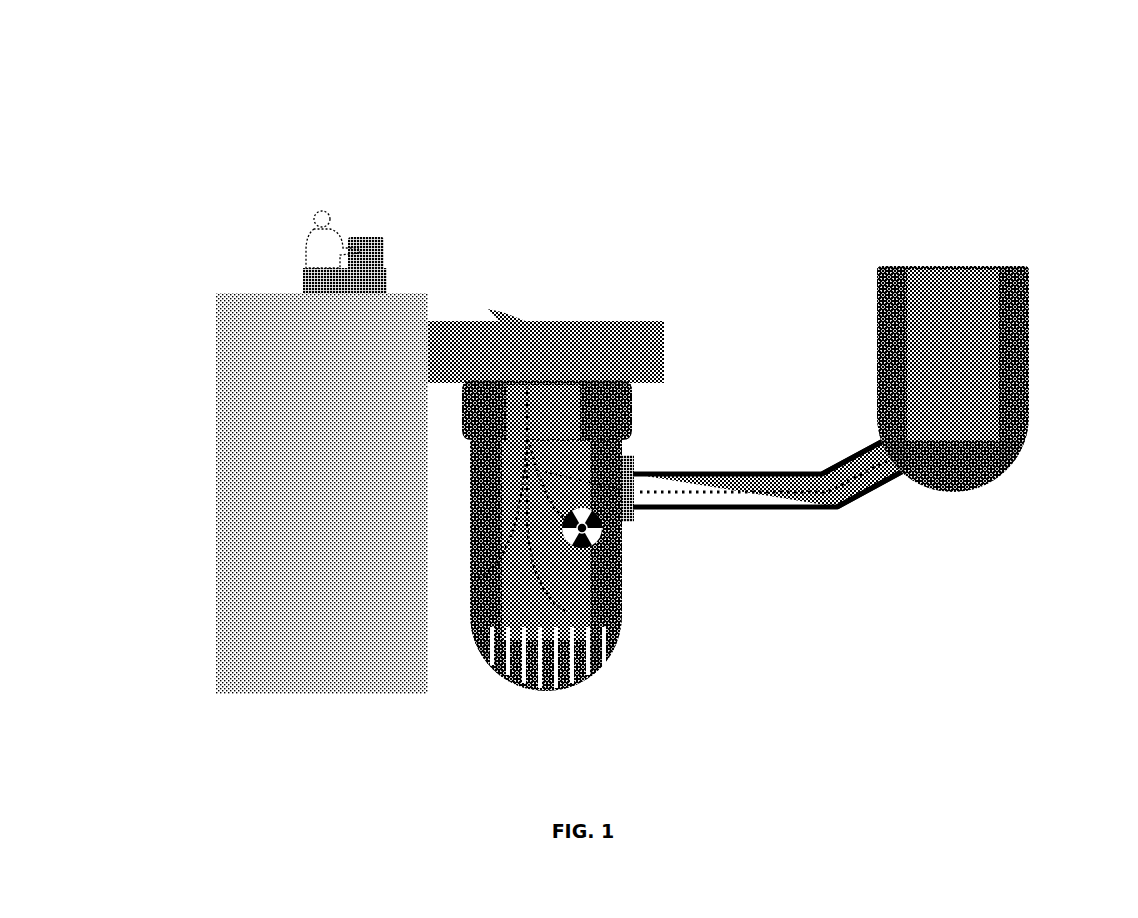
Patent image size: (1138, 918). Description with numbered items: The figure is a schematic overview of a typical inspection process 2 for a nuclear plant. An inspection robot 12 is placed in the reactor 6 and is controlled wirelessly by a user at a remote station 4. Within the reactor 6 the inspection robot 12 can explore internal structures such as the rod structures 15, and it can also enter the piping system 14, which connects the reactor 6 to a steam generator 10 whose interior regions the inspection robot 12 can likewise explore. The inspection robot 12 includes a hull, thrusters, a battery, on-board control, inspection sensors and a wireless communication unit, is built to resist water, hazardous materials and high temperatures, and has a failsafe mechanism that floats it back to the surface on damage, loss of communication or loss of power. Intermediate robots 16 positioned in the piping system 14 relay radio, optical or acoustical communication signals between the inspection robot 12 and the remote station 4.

The inspection process 2 is at (122, 78).
The remote station 4 is at (350, 209).
The reactor 6 is at (611, 606).
The steam generator 10 is at (1029, 306).
The inspection robot 12 is at (531, 318).
The piping system 14 is at (859, 516).
The rod structures 15 is at (583, 648).
The intermediate robots 16 is at (726, 472).